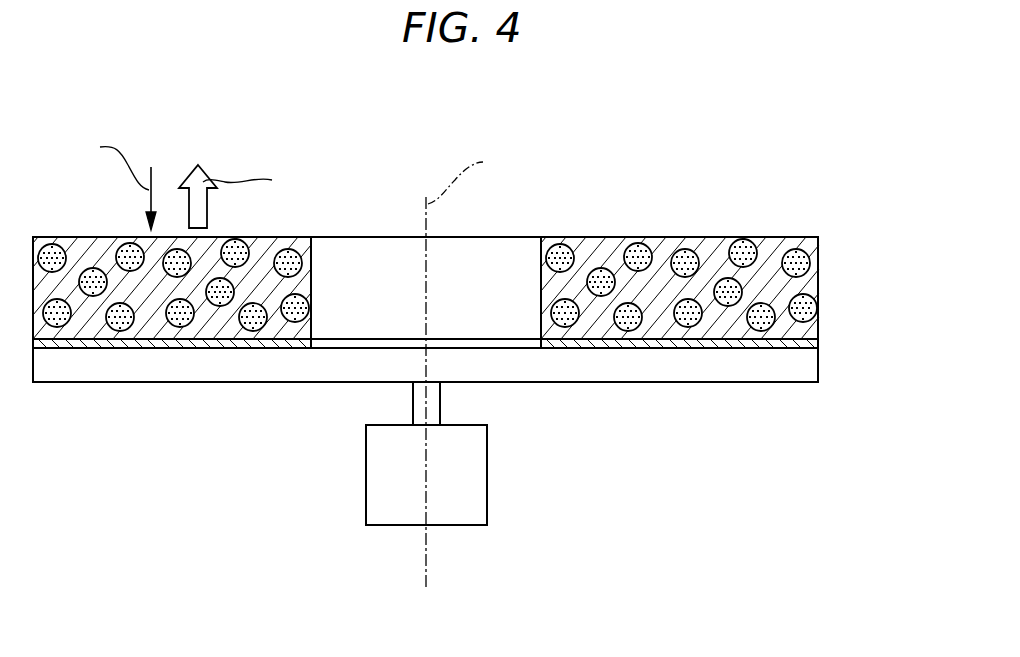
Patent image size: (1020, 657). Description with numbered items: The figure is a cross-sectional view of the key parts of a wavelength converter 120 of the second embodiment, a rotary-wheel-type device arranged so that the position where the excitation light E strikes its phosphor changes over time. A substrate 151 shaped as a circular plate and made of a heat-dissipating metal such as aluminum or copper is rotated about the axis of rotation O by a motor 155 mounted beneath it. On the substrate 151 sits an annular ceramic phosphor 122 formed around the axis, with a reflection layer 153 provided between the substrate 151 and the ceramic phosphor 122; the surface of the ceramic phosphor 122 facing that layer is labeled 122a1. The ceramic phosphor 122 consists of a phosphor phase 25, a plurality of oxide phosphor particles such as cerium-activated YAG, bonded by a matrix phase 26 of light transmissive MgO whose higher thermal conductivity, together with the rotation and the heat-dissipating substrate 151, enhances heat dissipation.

The wavelength converter 120 is at (686, 168).
The ceramic phosphor 122 is at (830, 275).
The matrix phase 26 is at (808, 250).
The phosphor phase 25 is at (812, 307).
The reflection layer 153 is at (815, 342).
The substrate 151 is at (810, 367).
The bottom surface of polishing layer 122a1 is at (557, 340).
The motor 155 is at (383, 517).